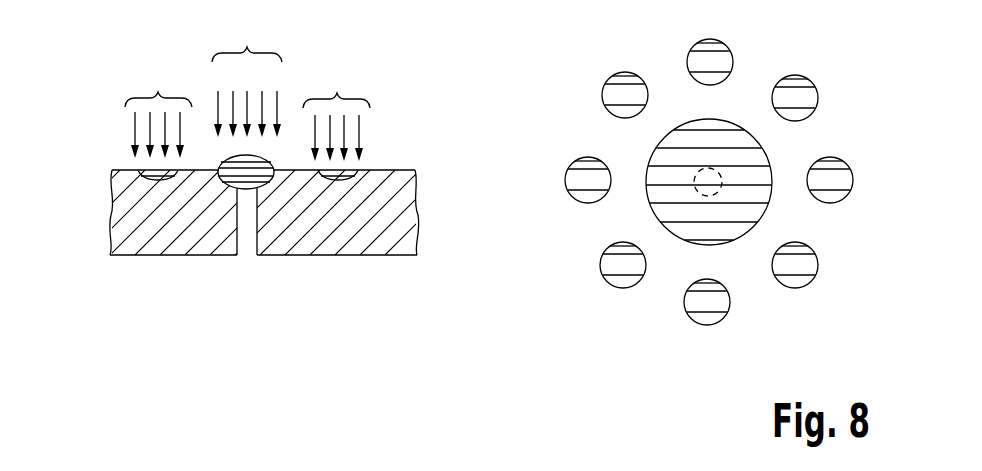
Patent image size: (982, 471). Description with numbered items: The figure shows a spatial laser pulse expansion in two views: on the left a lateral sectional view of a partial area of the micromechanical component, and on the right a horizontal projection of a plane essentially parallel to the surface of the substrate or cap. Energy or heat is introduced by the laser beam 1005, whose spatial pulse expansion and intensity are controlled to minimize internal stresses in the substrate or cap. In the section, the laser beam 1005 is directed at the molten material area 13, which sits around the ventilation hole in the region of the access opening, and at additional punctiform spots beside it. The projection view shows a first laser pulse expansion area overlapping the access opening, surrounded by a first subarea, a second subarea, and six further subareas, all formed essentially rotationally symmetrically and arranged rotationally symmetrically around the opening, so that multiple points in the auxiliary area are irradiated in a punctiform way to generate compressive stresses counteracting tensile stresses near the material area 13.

The material area 13 is at (222, 160).
The laser beam 1005 is at (247, 87).